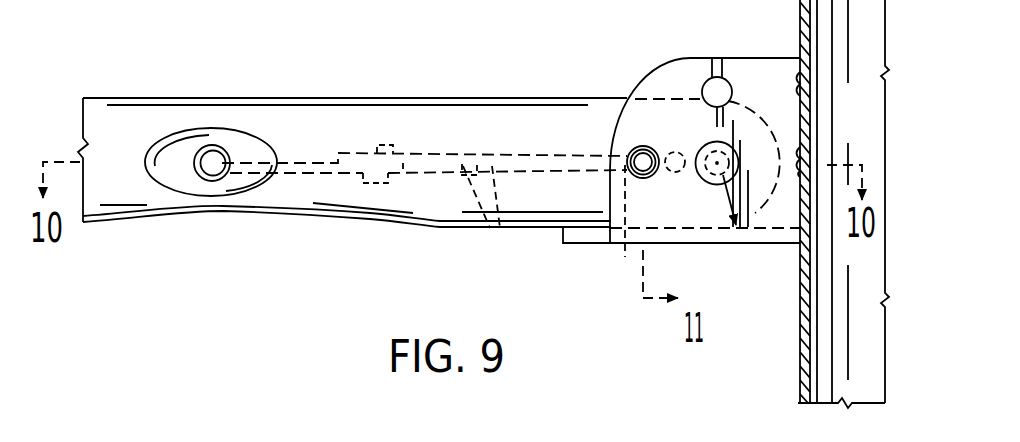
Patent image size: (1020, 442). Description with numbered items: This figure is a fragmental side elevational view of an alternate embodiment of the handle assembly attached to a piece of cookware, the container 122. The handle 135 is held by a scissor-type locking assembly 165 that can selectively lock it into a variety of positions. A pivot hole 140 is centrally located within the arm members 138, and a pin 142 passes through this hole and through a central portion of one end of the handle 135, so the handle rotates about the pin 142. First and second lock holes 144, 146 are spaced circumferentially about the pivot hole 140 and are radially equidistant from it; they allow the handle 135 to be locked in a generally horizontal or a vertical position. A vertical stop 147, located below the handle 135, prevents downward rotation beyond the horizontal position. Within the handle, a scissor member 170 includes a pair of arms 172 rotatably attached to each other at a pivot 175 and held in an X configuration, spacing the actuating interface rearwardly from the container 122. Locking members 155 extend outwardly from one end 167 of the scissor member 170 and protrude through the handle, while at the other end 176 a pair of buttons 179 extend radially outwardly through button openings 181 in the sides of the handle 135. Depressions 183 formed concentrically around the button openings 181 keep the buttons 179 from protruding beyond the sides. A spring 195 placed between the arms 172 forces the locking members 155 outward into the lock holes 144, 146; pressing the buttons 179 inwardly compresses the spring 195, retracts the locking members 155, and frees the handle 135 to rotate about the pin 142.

The container 122 is at (798, 330).
The handle 135 is at (335, 96).
The arm members 138 is at (655, 86).
The pivot hole 140 is at (742, 244).
The pin 142 is at (735, 158).
The first lock hole 144 is at (652, 173).
The second lock hole 146 is at (721, 78).
The vertical stop 147 is at (580, 240).
The locking members 155 is at (636, 151).
The scissor-type locking assembly 165 is at (416, 146).
The locking member end of scissor member 167 is at (621, 225).
The scissor member 170 is at (468, 148).
The scissor arms 172 is at (491, 216).
The pivot 175 is at (382, 185).
The button end of scissor member 176 is at (237, 162).
The buttons 179 is at (216, 170).
The button openings 181 is at (200, 152).
The depressions 183 is at (177, 178).
The spring 195 is at (673, 152).